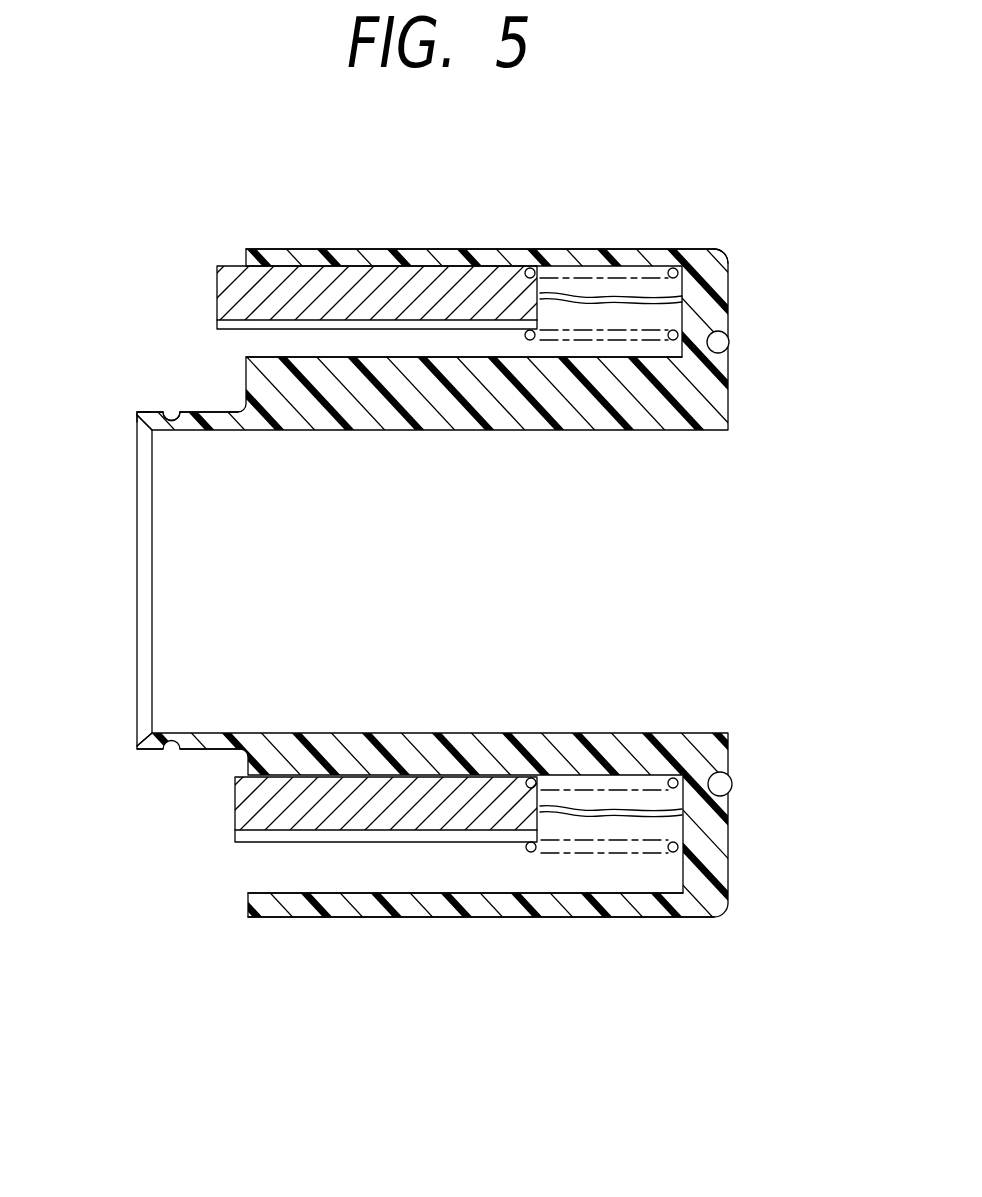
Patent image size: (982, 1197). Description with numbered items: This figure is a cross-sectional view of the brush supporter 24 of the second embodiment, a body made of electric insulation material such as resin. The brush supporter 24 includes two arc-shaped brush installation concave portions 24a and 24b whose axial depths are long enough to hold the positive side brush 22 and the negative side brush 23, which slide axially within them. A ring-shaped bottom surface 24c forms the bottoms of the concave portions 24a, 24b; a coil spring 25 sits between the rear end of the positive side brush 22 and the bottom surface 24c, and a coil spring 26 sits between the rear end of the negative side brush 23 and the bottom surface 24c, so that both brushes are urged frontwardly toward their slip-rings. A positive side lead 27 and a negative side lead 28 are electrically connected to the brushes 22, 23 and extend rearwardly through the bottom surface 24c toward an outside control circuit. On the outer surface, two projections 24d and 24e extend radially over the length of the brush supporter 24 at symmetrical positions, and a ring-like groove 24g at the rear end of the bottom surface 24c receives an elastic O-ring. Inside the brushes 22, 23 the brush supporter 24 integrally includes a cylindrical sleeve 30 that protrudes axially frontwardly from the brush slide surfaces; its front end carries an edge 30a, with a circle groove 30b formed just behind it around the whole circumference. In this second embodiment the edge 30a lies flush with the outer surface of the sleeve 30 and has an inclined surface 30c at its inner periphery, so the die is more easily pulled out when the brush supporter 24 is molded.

The positive side brush 22 is at (260, 808).
The negative side brush 23 is at (217, 297).
The brush supporter 24 is at (737, 843).
The brush installation concave portion 24a is at (272, 877).
The brush installation concave portion 24b is at (258, 345).
The ring-shaped bottom surface 24c is at (703, 281).
The projection 24d is at (432, 917).
The projection 24e is at (363, 249).
The ring-like groove 24g is at (718, 342).
The coil spring 25 is at (600, 850).
The coil spring 26 is at (620, 343).
The positive side lead 27 is at (643, 805).
The negative side lead 28 is at (600, 297).
The cylindrical sleeve 30 is at (203, 412).
The edge 30a is at (137, 412).
The circle groove 30b is at (172, 414).
The inclined surface 30c is at (140, 430).